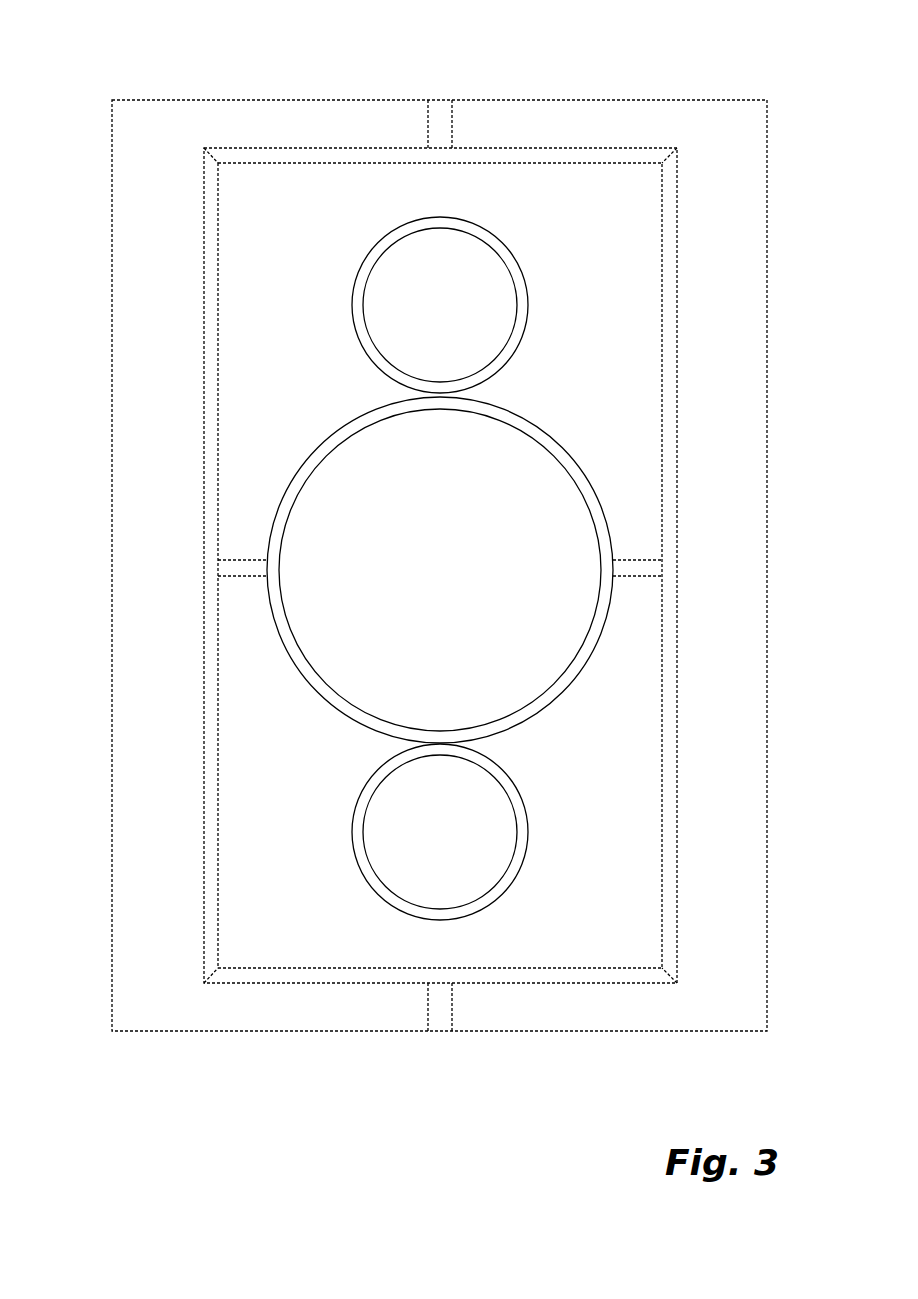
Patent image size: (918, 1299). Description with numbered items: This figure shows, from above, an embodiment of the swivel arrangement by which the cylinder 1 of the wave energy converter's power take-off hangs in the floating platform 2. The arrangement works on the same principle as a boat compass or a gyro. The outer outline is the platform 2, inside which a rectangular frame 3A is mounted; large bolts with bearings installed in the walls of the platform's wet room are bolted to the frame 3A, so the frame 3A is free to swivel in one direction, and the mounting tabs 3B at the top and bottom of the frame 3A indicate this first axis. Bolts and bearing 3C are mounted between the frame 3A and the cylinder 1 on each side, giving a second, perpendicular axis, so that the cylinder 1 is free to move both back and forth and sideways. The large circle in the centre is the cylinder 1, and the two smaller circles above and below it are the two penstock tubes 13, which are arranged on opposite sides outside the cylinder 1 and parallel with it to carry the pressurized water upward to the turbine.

The cylinder 1 is at (537, 537).
The floating platform 2 is at (188, 108).
The frame 3A is at (328, 153).
The top/bottom tabs of holder 3B is at (438, 120).
The bolts and bearing 3C is at (236, 568).
The penstock tube 13 is at (483, 300).